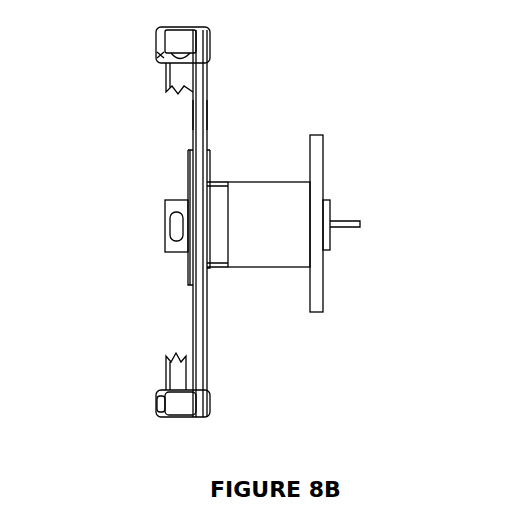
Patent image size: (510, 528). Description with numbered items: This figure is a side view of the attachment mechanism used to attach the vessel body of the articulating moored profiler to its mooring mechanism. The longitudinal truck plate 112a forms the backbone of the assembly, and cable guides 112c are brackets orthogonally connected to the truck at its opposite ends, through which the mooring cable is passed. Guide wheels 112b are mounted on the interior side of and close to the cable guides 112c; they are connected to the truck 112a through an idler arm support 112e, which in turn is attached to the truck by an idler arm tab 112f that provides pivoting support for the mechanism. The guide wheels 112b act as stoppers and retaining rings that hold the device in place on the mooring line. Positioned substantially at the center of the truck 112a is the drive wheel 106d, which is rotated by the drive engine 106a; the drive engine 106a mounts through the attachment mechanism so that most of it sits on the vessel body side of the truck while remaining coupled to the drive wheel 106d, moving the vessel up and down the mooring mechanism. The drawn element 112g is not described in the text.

The drive engine 106a is at (214, 188).
The drive wheel 106d is at (272, 258).
The longitudinal truck plate 112a is at (177, 134).
The guide wheels 112b is at (168, 91).
The cable guides 112c is at (158, 56).
The idler arm support 112e is at (192, 315).
The idler arm tab 112f is at (189, 283).
The motor flange and shaft 112g is at (316, 148).